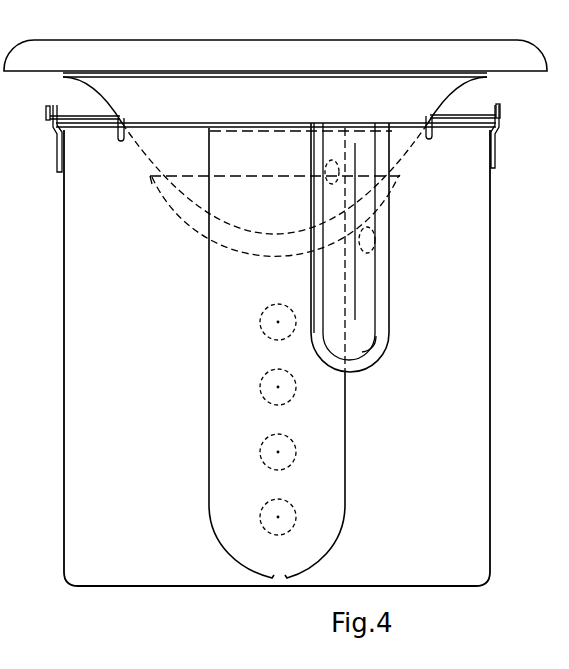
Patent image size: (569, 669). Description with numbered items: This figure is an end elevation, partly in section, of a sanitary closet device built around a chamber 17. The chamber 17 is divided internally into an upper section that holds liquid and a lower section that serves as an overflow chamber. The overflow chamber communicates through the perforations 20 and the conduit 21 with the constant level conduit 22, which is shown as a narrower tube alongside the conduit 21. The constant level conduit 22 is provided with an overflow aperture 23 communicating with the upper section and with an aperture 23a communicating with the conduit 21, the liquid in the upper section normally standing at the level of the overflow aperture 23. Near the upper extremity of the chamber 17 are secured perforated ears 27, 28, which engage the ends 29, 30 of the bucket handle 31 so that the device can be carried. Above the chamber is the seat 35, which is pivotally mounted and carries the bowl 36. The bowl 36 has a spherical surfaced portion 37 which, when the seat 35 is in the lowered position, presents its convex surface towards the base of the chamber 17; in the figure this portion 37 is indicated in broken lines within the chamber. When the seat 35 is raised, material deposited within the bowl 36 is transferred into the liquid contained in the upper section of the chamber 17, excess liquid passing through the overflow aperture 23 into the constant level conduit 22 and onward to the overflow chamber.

The chamber 17 is at (486, 513).
The perforations 20 is at (267, 399).
The conduit 21 is at (345, 508).
The constant level conduit 22 is at (367, 327).
The overflow aperture 23 is at (325, 168).
The aperture 23a is at (375, 238).
The perforated ear 27 is at (56, 154).
The perforated ear 28 is at (493, 153).
The end of bucket handle 29 is at (46, 116).
The end of bucket handle 30 is at (505, 114).
The bucket handle 31 is at (468, 116).
The seat 35 is at (392, 41).
The bowl 36 is at (110, 91).
The spherical surfaced portion 37 is at (204, 231).